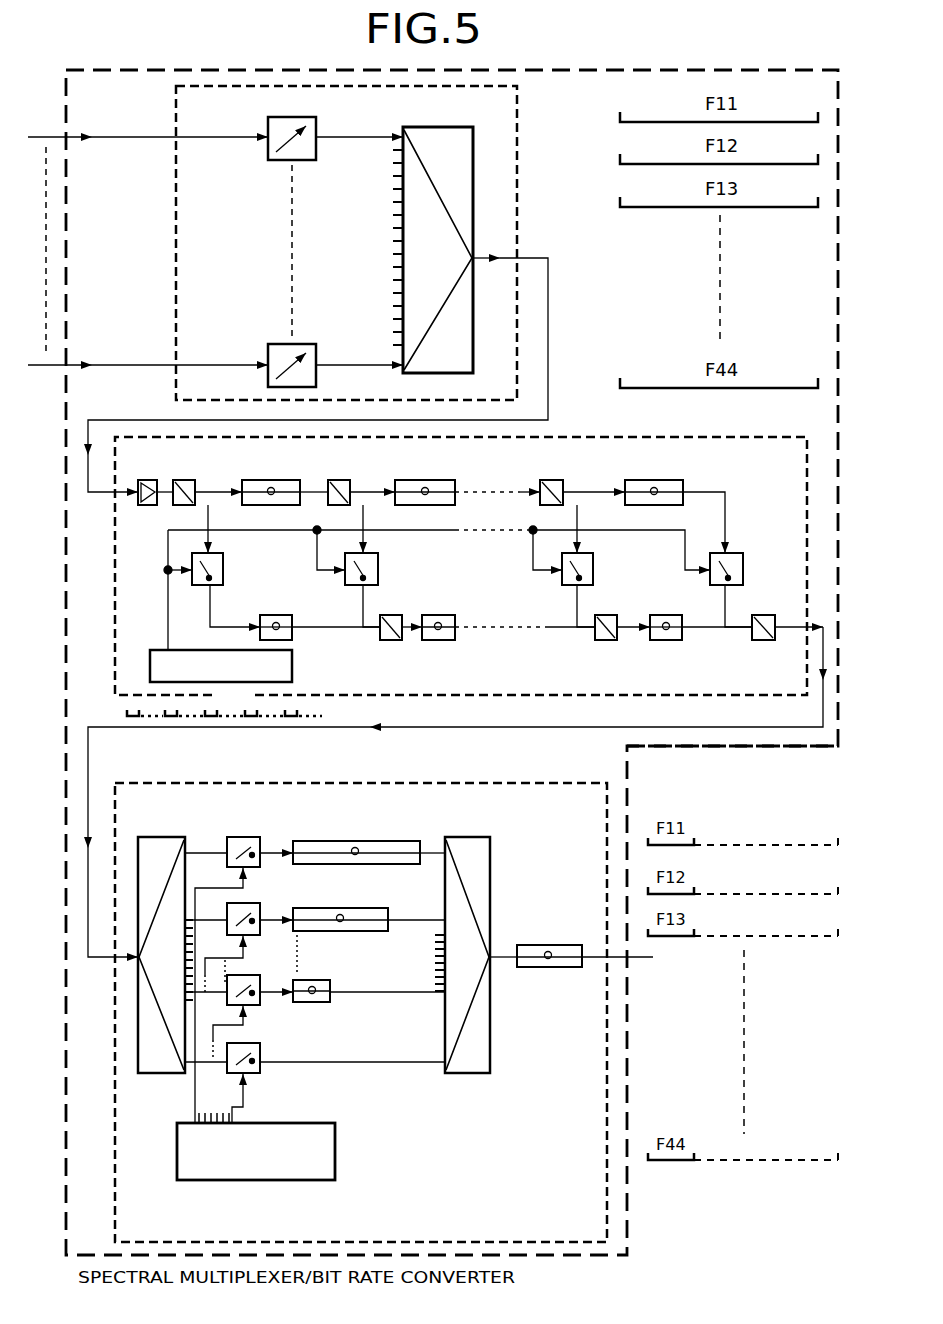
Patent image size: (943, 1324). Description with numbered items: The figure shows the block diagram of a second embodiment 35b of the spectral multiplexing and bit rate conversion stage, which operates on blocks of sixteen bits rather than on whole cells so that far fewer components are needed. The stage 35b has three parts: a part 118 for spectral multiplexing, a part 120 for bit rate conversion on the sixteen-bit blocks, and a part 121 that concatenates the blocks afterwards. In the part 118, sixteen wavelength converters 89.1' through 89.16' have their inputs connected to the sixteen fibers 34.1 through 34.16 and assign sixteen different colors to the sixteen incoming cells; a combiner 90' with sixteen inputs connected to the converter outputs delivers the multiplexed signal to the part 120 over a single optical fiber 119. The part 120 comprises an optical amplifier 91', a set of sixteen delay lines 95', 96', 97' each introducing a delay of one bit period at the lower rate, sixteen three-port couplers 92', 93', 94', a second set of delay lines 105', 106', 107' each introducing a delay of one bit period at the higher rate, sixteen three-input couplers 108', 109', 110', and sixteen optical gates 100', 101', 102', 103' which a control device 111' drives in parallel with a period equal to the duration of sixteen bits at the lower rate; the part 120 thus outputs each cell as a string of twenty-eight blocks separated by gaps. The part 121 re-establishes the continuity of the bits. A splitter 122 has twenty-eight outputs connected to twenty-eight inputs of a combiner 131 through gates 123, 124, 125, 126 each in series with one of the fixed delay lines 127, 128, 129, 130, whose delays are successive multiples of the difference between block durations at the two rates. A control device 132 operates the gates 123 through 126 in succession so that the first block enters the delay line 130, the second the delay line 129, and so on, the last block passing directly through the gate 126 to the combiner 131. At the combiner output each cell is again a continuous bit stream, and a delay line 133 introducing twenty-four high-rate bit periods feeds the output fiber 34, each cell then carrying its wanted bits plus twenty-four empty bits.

The spectral multiplexing and bit rate conversion stage 35b is at (748, 70).
The fiber 34.1 is at (160, 137).
The fiber 34.16 is at (160, 365).
The wavelength converter 89.1' is at (259, 127).
The wavelength converter 89.16' is at (256, 354).
The combiner 90' is at (449, 236).
The spectral multiplexing part 118 is at (517, 230).
The optical fiber 119 is at (548, 325).
The bit rate conversion part 120 is at (624, 436).
The optical amplifier 91' is at (155, 479).
The three-port coupler 92' is at (196, 480).
The three-port coupler 93' is at (357, 480).
The three-port coupler 94' is at (568, 480).
The delay line 95' is at (286, 479).
The delay line 96' is at (439, 479).
The delay line 97' is at (673, 479).
The optical gate 100' is at (241, 569).
The optical gate 101' is at (394, 569).
The optical gate 102' is at (612, 569).
The optical gate 103' is at (759, 569).
The delay line 105' is at (308, 633).
The delay line 106' is at (465, 634).
The delay line 107' is at (691, 634).
The three-input coupler 108' is at (410, 647).
The three-input coupler 109' is at (589, 647).
The three-input coupler 110' is at (782, 647).
The control device 111' is at (203, 652).
The concatenation part 121 is at (540, 764).
The splitter 122 is at (163, 845).
The optical gate 123 is at (246, 837).
The optical gate 124 is at (262, 886).
The optical gate 125 is at (262, 958).
The optical gate 126 is at (262, 1026).
The fixed delay line 127 is at (340, 1062).
The fixed delay line 128 is at (325, 980).
The fixed delay line 129 is at (385, 908).
The fixed delay line 130 is at (406, 822).
The combiner 131 is at (487, 840).
The control device 132 is at (336, 1123).
The delay line 133 is at (560, 968).
The fiber 34 is at (650, 958).